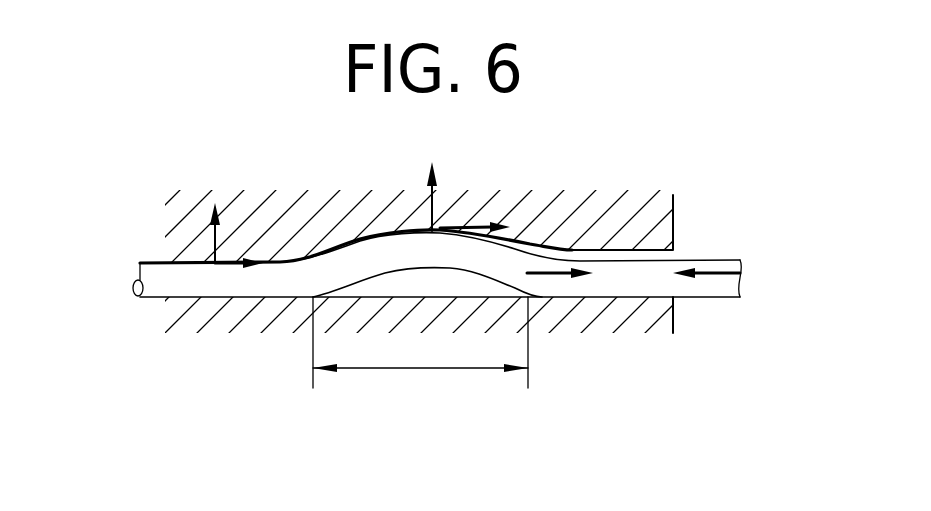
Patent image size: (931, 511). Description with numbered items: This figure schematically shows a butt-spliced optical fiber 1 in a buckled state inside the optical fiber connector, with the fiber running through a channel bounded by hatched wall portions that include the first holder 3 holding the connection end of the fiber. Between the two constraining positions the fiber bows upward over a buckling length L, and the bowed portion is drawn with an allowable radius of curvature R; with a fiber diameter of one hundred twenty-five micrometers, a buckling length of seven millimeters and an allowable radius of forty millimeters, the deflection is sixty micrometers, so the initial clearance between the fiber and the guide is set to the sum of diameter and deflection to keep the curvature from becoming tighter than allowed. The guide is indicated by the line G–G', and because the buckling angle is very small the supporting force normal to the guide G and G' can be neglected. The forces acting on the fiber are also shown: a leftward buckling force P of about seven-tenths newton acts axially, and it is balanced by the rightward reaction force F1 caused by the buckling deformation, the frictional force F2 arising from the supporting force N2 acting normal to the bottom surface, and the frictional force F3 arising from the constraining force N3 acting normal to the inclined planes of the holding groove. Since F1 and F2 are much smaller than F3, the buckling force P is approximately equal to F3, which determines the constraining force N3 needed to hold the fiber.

The first optical fiber 1 is at (720, 260).
The first holder 3 is at (673, 222).
The buckling force P is at (723, 278).
The supporting force acting normal to the bottom N2 is at (452, 185).
The constraining force acting normal to the holding grooves N3 is at (237, 206).
The guide G is at (326, 172).
The guide G' is at (589, 173).
The reaction force F1 is at (637, 275).
The frictional force F2 is at (462, 253).
The frictional force F3 is at (200, 283).
The buckling length L is at (420, 352).
The allowable radius of curvature R is at (372, 258).